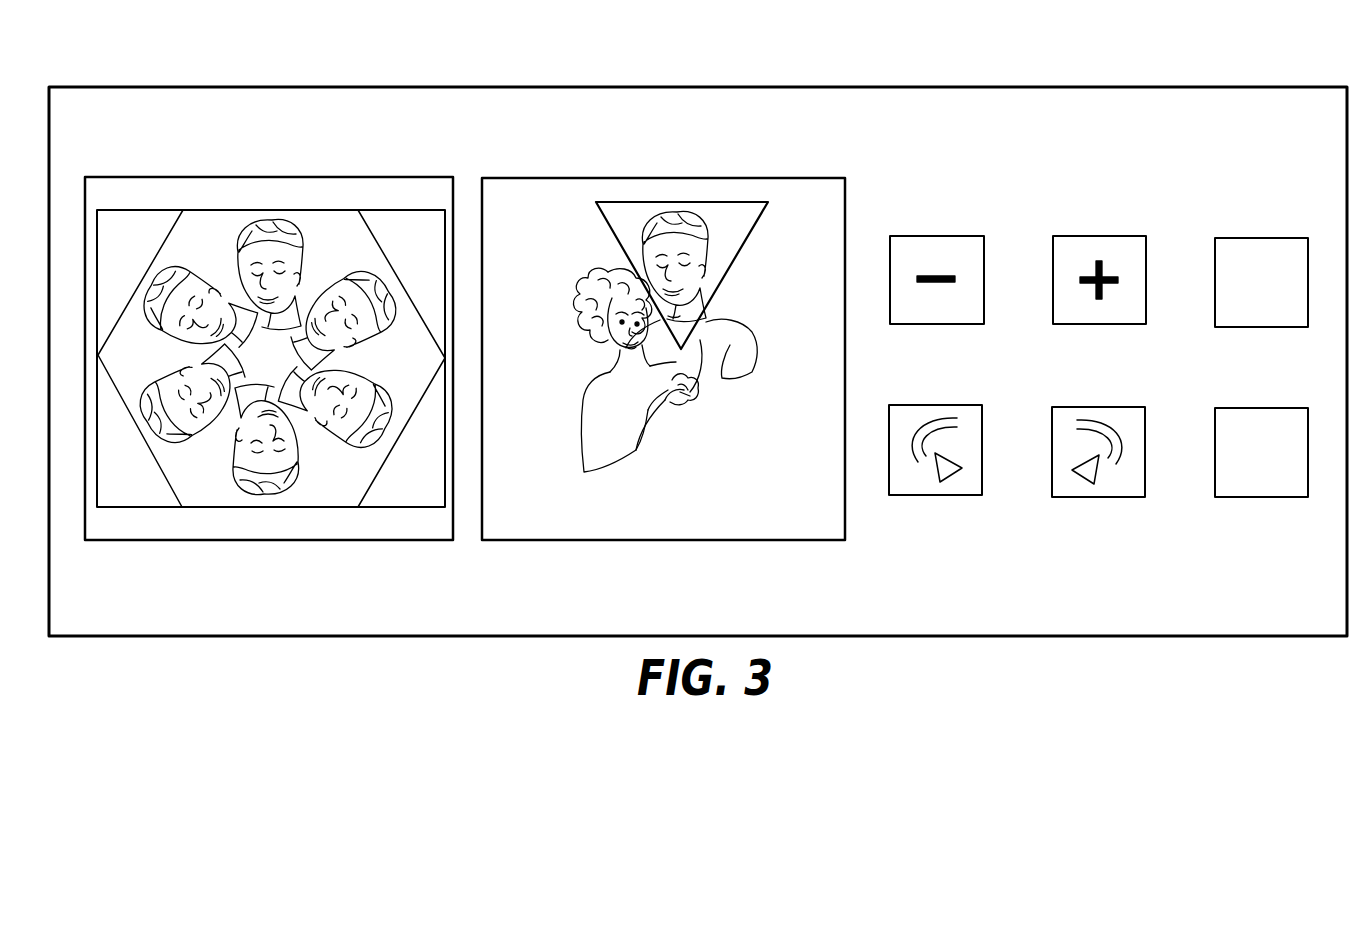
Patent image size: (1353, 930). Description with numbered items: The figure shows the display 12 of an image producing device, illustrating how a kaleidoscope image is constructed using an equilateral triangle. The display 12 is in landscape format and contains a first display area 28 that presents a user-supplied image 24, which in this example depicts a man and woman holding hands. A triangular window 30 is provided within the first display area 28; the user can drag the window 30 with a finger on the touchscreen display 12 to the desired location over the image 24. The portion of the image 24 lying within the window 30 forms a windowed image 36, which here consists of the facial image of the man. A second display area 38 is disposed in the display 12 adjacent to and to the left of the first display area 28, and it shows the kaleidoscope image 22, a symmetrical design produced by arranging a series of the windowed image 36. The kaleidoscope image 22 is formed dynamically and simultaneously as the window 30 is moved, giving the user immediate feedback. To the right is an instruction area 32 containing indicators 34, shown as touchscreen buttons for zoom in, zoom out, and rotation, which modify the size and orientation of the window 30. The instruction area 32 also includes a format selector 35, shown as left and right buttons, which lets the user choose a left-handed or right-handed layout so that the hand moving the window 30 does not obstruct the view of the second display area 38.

The display 12 is at (171, 78).
The kaleidoscope image 22 is at (153, 507).
The user-supplied image 24 is at (632, 354).
The first display area 28 is at (561, 178).
The window 30 is at (643, 202).
The instruction area 32 is at (1020, 207).
The indicators 34 is at (957, 236).
The format selector 35 is at (1277, 238).
The windowed image 36 is at (730, 217).
The second display area 38 is at (183, 177).